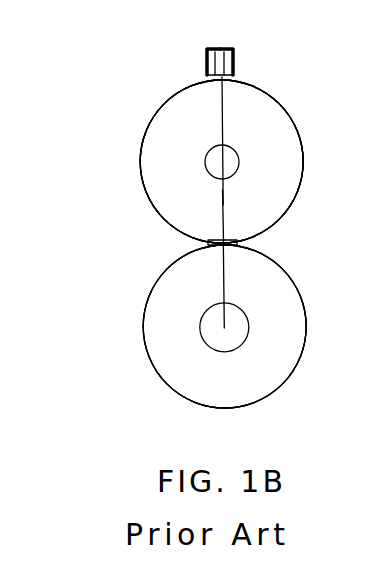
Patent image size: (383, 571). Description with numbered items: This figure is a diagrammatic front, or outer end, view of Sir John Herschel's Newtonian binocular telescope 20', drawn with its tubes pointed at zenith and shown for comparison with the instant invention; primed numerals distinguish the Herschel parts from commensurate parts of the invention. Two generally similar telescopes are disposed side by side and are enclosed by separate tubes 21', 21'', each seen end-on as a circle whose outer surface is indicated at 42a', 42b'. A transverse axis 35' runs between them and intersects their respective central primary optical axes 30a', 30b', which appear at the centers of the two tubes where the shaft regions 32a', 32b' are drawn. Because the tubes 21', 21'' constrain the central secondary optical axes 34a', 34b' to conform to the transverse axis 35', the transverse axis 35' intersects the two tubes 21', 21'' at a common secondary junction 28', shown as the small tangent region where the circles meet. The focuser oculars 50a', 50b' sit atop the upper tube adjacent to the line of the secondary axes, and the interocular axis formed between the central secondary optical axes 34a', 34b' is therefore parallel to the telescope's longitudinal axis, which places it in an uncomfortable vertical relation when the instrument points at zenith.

The prior art roller assembly 20' is at (254, 132).
The tube 21' is at (250, 161).
The tube 21'' is at (259, 326).
The common secondary junction 28' is at (172, 247).
The central primary optical axis 30a' is at (162, 161).
The central primary optical axis 30b' is at (159, 326).
The upper roller shaft 32a' is at (251, 174).
The lower roller shaft 32b' is at (246, 344).
The central secondary optical axis 34a' is at (254, 141).
The central secondary optical axis 34b' is at (250, 284).
The transverse axis 35' is at (278, 229).
The upper roller surface 42a' is at (180, 161).
The lower roller surface 42b' is at (189, 332).
The focuser ocular 50a' is at (253, 45).
The focuser ocular 50b' is at (181, 45).